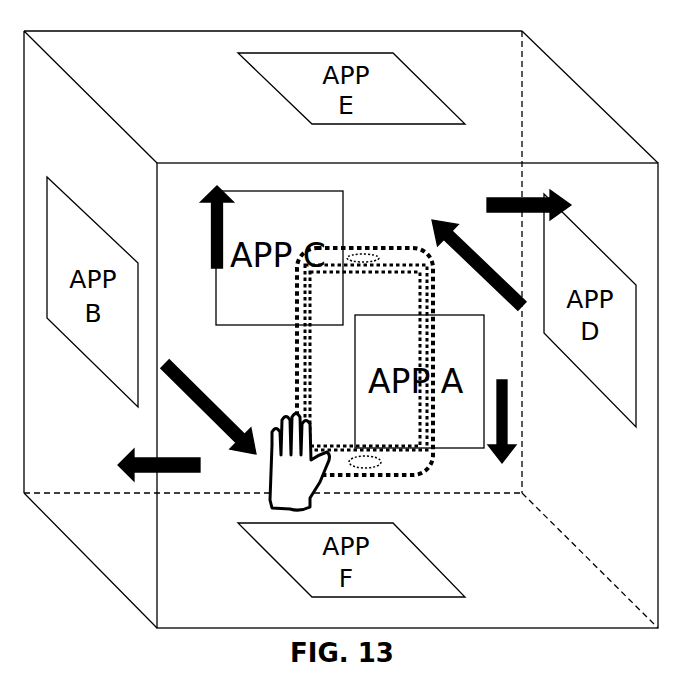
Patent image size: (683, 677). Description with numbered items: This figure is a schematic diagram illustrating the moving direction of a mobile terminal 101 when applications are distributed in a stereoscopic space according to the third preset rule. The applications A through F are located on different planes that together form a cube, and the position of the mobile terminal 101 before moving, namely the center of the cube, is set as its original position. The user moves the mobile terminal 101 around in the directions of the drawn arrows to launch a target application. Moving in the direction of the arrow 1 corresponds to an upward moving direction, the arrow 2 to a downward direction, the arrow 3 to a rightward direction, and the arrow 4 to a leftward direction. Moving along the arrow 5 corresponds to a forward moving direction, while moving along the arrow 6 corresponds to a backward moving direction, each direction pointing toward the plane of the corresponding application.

The arrow 1 is at (217, 210).
The arrow 2 is at (502, 436).
The arrow 3 is at (539, 205).
The arrow 4 is at (147, 464).
The arrow 5 is at (211, 422).
The arrow 6 is at (470, 252).
The mobile terminal 101 is at (434, 306).